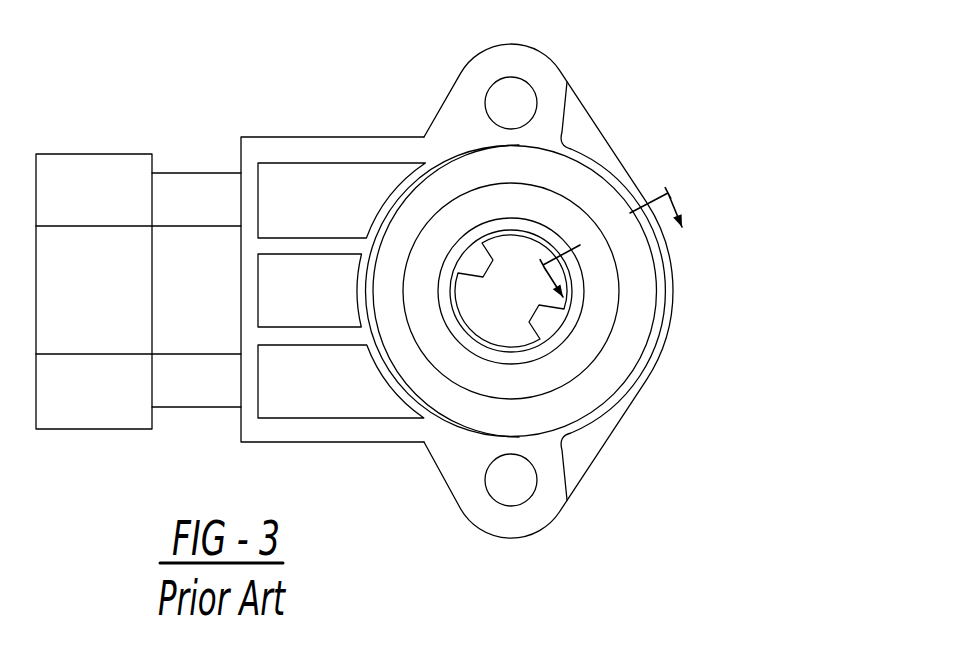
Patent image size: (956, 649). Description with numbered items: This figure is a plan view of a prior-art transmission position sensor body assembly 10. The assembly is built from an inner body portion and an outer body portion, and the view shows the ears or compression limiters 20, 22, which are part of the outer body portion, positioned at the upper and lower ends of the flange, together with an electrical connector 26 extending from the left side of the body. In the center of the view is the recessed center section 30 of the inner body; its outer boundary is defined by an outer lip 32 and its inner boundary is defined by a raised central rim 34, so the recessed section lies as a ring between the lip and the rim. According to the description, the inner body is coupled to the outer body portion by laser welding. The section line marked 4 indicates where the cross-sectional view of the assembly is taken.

The transmission position sensor body assembly 10 is at (667, 80).
The compression limiter 20 is at (535, 508).
The compression limiter 22 is at (492, 62).
The electrical connector 26 is at (93, 173).
The recessed center section 30 is at (602, 370).
The outer lip 32 is at (537, 435).
The raised central rim 34 is at (598, 310).
The section line 4- 4 is at (607, 234).